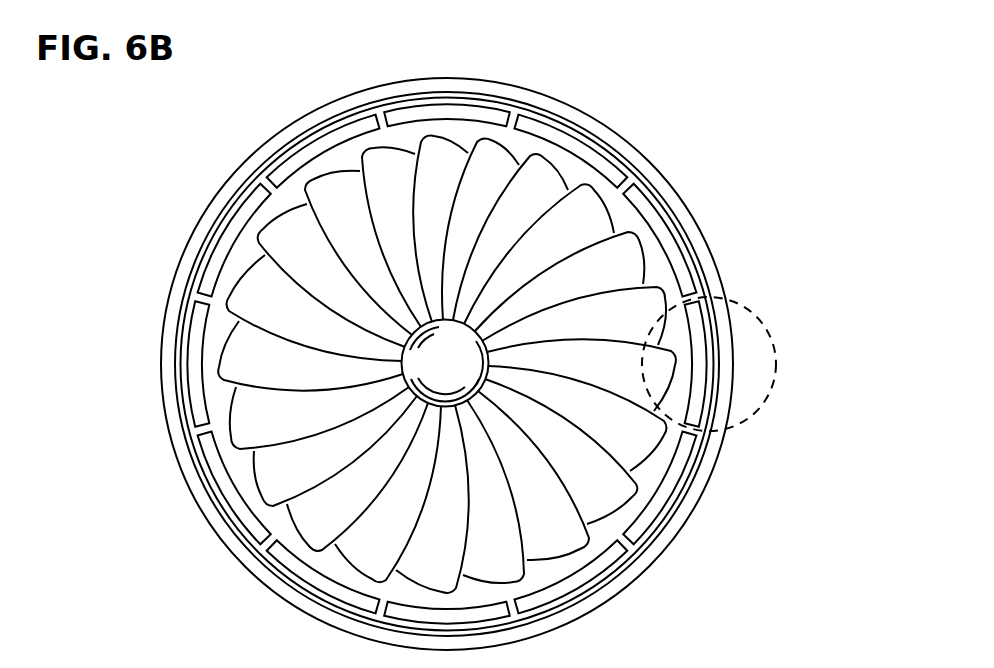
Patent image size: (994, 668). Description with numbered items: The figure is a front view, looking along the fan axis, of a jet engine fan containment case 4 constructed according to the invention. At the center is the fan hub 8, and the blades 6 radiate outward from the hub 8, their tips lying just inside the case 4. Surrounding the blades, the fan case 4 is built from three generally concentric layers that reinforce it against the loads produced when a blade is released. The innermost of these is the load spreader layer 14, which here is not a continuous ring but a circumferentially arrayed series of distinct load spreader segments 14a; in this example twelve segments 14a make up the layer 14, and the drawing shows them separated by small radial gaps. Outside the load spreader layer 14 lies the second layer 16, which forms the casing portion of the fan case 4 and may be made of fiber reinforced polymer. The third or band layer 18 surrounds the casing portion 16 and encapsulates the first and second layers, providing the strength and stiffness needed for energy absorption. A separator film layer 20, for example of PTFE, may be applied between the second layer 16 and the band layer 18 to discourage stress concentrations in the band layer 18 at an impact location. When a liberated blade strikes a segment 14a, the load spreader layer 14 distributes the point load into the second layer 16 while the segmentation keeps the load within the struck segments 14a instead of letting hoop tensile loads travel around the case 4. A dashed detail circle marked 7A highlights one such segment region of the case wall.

The fan containment case 4 is at (650, 157).
The blades 6 is at (633, 265).
The fan hub 8 is at (307, 77).
The load spreader layer 14 is at (573, 155).
The load spreader segments 14a is at (192, 372).
The second layer 16 is at (512, 112).
The third or band layer 18 is at (448, 82).
The separator film layer 20 is at (377, 100).
The detail view circle 7A is at (760, 318).